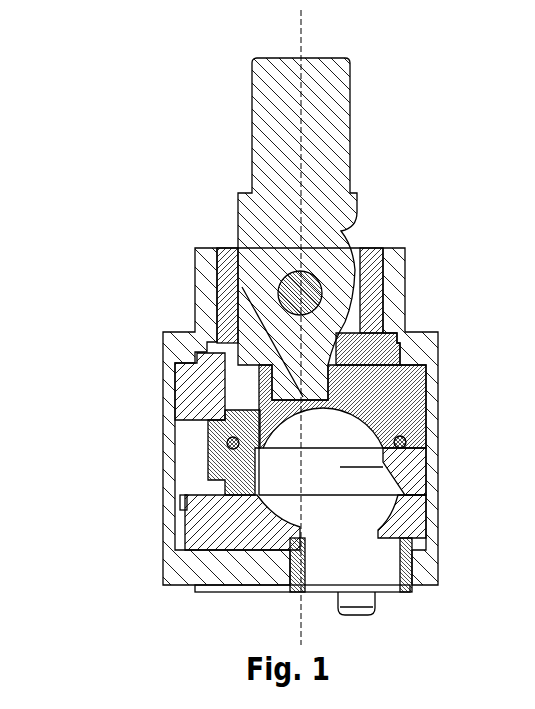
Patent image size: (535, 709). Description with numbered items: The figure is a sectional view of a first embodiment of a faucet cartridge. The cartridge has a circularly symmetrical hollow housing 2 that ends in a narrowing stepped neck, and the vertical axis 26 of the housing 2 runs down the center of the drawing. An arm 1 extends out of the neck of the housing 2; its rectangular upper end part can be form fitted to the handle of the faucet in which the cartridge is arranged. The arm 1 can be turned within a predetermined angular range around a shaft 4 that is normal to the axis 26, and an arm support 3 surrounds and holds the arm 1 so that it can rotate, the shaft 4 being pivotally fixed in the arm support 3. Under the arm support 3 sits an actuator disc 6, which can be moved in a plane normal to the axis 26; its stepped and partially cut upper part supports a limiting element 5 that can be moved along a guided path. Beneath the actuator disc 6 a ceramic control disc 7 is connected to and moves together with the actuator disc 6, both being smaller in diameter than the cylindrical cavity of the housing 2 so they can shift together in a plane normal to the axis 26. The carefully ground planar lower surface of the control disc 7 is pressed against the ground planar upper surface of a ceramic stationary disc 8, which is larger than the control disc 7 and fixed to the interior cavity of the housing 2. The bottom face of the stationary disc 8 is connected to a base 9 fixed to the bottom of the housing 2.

The arm 1 is at (272, 95).
The housing 2 is at (205, 256).
The arm support 3 is at (228, 289).
The shaft 4 is at (300, 296).
The limiting element 5 is at (197, 380).
The actuator disc 6 is at (210, 440).
The control disc 7 is at (215, 467).
The stationary disc 8 is at (232, 516).
The base 9 is at (178, 565).
The axis 26 is at (310, 23).